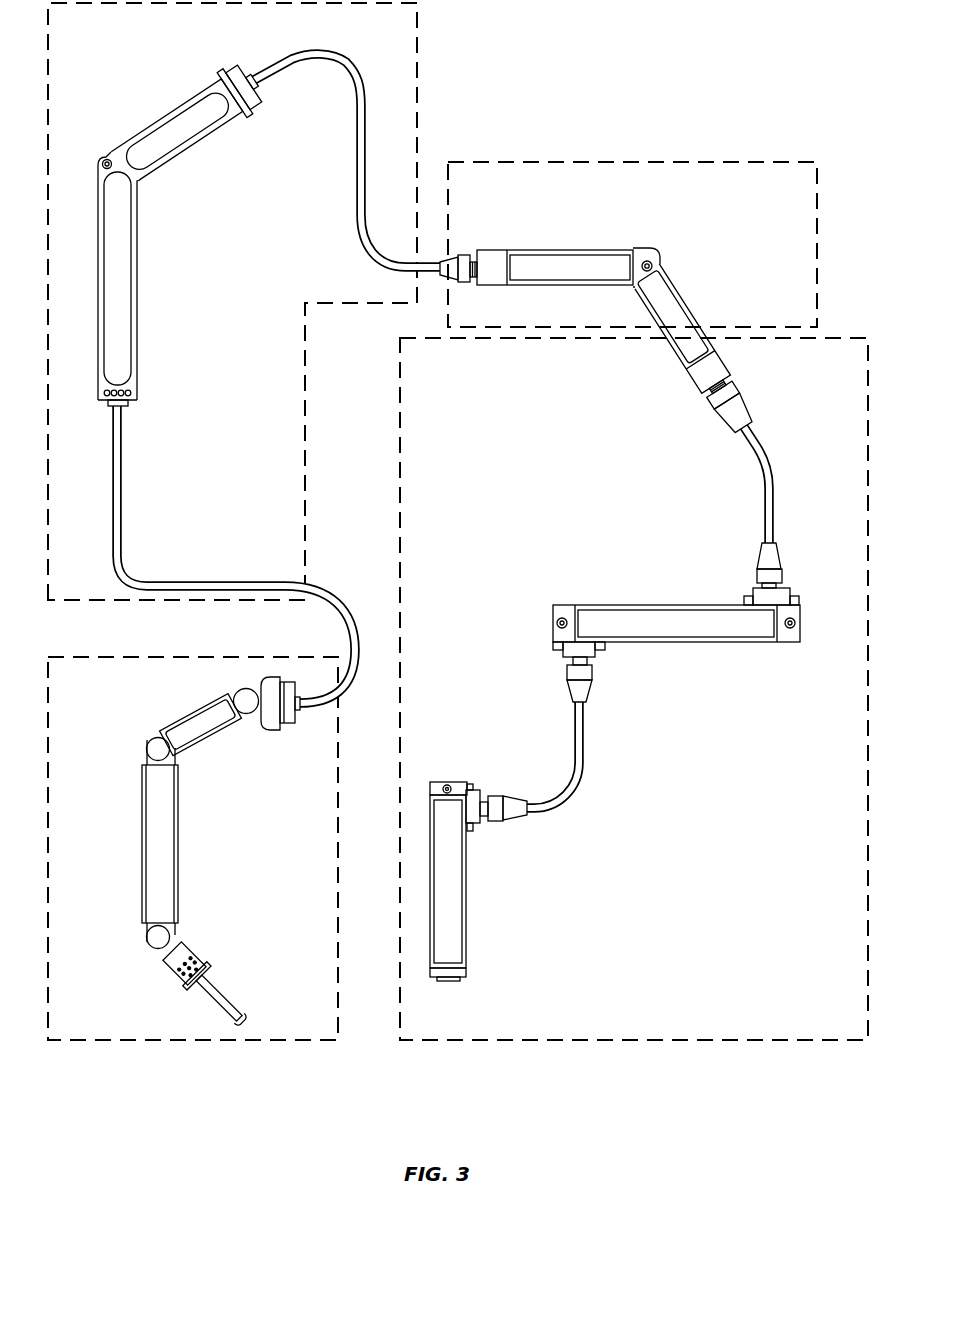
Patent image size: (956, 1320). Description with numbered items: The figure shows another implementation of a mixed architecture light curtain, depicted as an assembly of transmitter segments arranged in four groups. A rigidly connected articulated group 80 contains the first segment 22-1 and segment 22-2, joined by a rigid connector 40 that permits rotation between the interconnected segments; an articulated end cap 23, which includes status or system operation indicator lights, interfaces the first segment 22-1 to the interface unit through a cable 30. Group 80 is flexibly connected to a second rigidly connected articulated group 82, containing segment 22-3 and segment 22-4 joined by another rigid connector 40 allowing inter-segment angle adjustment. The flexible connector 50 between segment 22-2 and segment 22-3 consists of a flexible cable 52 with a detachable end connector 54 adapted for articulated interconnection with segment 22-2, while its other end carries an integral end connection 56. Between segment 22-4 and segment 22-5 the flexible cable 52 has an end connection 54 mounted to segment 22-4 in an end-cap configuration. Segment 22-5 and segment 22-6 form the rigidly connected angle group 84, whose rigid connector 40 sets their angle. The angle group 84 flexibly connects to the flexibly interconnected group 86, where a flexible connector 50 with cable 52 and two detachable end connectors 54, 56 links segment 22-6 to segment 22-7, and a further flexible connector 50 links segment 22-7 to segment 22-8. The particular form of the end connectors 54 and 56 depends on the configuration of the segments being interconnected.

The first segment 22-1 is at (181, 884).
The segment 22-2 is at (207, 745).
The segment 22-3 is at (137, 318).
The segment 22-4 is at (197, 142).
The segment 22-5 is at (565, 250).
The segment 22-6 is at (681, 357).
The segment 22-7 is at (697, 643).
The segment 22-8 is at (468, 898).
The end cap 23 is at (178, 975).
The cable 30 is at (226, 997).
The rigid connector 40 is at (97, 147).
The flexible connector 50 is at (479, 421).
The flexible cable 52 is at (344, 60).
The detachable end connector 54 is at (243, 70).
The integral end connection 56 is at (135, 408).
The rigidly connected articulated group 80 is at (90, 657).
The second rigidly connected articulated group 82 is at (419, 30).
The rigidly connected angle group 84 is at (512, 162).
The flexibly interconnected group 86 is at (400, 415).